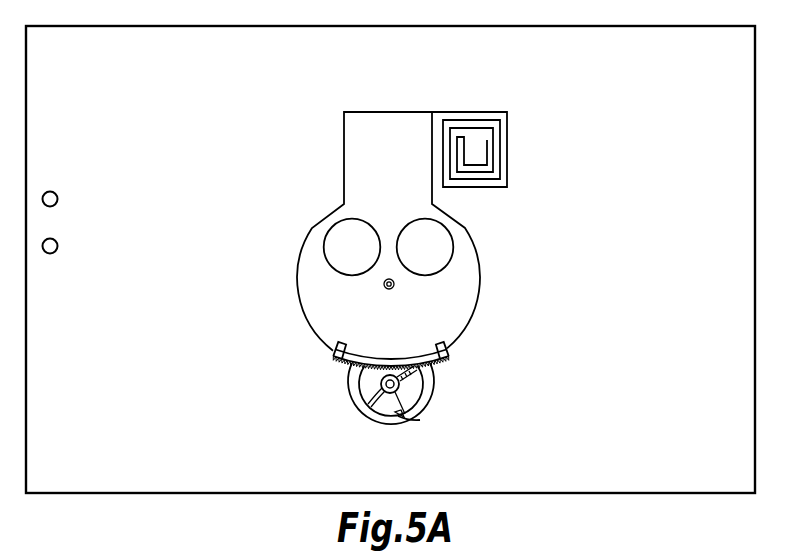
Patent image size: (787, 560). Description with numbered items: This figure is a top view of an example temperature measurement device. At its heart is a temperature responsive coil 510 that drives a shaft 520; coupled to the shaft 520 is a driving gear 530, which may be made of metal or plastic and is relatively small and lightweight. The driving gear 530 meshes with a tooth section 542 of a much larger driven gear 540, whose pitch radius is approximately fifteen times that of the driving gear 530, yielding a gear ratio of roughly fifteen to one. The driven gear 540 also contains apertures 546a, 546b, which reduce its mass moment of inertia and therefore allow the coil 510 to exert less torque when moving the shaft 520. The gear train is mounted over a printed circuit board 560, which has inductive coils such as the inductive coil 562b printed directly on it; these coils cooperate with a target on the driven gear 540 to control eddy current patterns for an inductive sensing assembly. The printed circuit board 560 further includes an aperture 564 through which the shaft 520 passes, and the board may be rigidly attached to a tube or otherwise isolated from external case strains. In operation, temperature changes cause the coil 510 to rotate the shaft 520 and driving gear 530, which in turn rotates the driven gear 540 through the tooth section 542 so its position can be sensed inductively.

The temperature responsive coil 510 is at (372, 415).
The shaft 520 is at (403, 398).
The driving gear 530 is at (394, 396).
The driven gear 540 is at (480, 300).
The tooth section 542 is at (363, 356).
The aperture 546a is at (453, 237).
The aperture 546b is at (327, 237).
The printed circuit board 560 is at (613, 494).
The inductive coil 562b is at (507, 144).
The aperture 564 is at (409, 423).